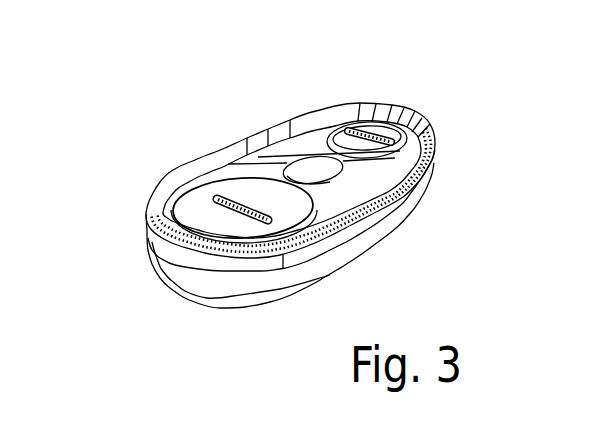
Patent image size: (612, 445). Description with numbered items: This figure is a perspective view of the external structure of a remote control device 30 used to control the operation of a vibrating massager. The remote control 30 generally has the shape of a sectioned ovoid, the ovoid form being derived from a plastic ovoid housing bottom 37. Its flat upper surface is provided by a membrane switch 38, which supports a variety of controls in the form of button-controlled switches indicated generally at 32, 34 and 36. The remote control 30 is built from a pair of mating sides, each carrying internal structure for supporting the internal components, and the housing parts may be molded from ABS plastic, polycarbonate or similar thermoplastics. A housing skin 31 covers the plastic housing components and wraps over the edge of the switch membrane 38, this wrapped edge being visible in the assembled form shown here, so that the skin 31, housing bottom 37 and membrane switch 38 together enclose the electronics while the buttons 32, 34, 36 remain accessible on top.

The remote control device 30 is at (387, 37).
The housing skin 31 is at (432, 172).
The button-controlled switch 32 is at (362, 128).
The button-controlled switch 34 is at (303, 170).
The button-controlled switch 36 is at (190, 190).
The ovoid housing bottom 37 is at (147, 232).
The membrane switch 38 is at (417, 131).